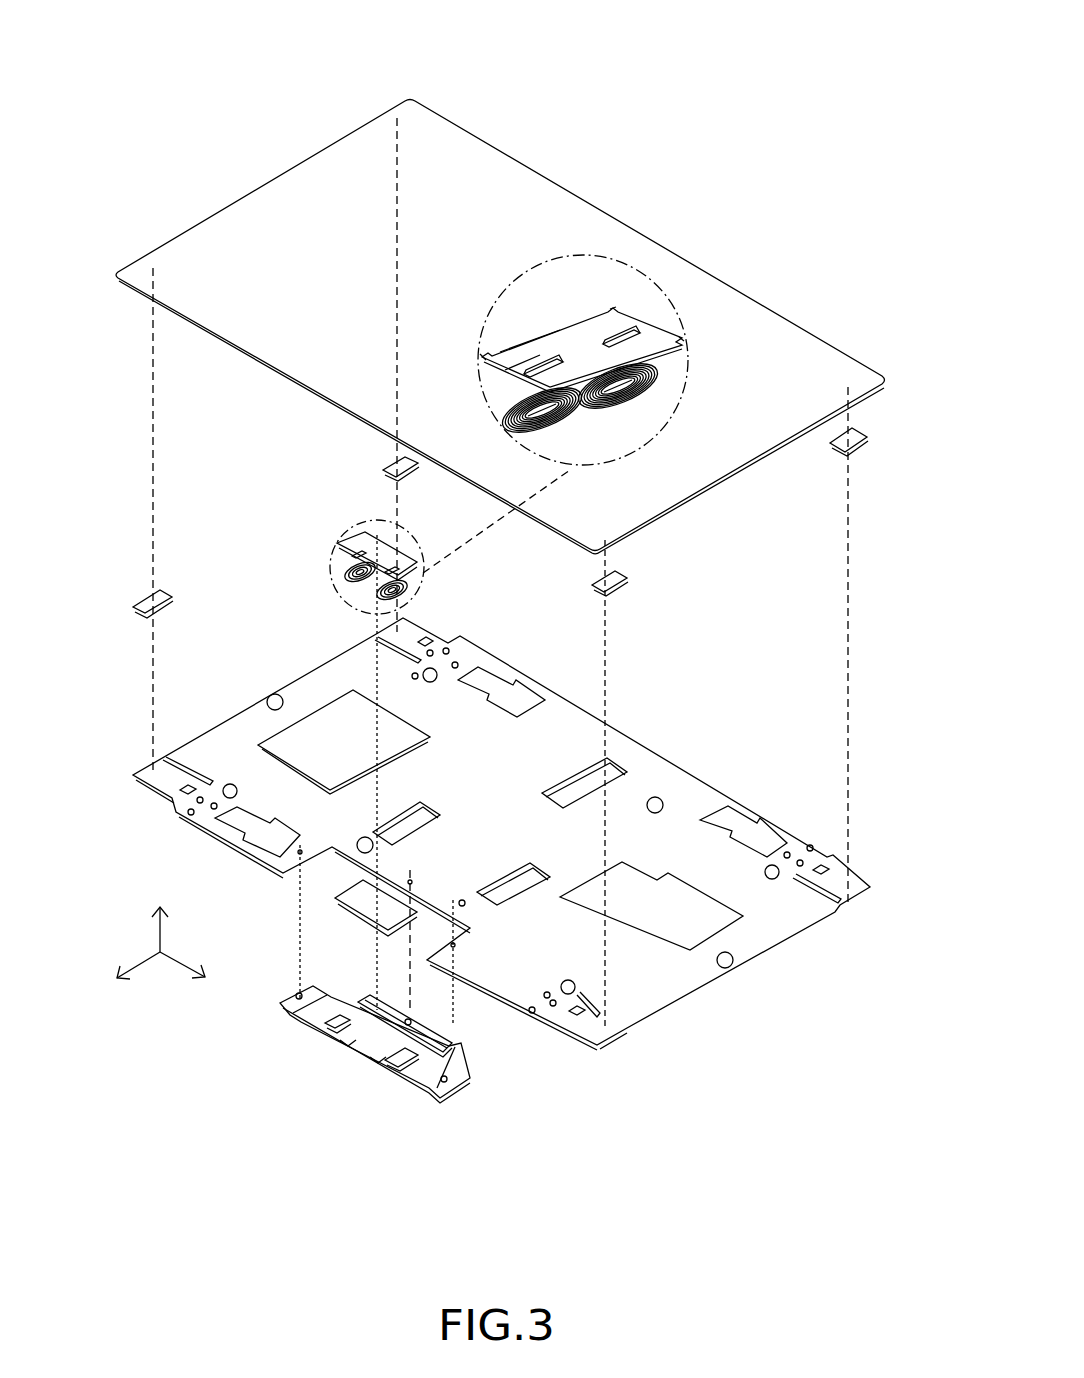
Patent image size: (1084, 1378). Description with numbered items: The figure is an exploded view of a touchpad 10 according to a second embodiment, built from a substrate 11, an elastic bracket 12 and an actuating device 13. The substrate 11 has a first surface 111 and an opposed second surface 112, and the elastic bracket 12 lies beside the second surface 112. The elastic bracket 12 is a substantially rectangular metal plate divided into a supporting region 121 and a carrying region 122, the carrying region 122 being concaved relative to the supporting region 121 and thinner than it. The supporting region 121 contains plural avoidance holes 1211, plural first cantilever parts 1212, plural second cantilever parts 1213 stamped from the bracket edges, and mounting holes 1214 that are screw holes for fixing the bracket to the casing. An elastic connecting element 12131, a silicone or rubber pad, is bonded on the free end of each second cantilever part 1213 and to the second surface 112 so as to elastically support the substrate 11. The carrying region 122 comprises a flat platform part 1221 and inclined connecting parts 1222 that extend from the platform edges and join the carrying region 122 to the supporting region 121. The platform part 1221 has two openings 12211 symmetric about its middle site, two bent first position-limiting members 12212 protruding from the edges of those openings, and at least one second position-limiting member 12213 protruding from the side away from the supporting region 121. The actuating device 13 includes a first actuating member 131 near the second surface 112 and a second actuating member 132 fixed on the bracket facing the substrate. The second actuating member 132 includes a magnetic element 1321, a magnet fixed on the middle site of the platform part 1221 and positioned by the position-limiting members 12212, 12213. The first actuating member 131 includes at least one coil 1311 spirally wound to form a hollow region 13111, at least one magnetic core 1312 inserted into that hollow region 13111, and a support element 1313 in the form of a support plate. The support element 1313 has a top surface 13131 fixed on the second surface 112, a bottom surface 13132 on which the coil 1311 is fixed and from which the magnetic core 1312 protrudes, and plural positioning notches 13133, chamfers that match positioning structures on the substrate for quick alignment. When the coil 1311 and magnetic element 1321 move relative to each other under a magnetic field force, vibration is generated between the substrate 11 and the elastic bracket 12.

The touchpad 10 is at (244, 131).
The substrate 11 is at (543, 80).
The first surface 111 is at (840, 317).
The second surface 112 is at (723, 527).
The elastic bracket 12 is at (641, 1115).
The supporting region 121 is at (705, 1060).
The avoidance holes 1211 is at (773, 793).
The first cantilever parts 1212 is at (540, 755).
The second cantilever parts 1213 is at (128, 810).
The elastic connecting element 12131 is at (862, 445).
The mounting holes 1214 is at (240, 668).
The carrying region 122 is at (703, 1205).
The platform part 1221 is at (786, 1170).
The openings 12211 is at (415, 1068).
The first position-limiting members 12212 is at (283, 1030).
The second position-limiting member 12213 is at (313, 1077).
The connecting parts 1222 is at (467, 1080).
The actuating device 13 is at (663, 65).
The first actuating member 131 is at (726, 20).
The coil 1311 is at (513, 420).
The hollow region 13111 is at (570, 420).
The magnetic core 1312 is at (613, 337).
The support element 1313 is at (803, 55).
The top surface 13131 is at (515, 347).
The bottom surface 13132 is at (510, 372).
The positioning notches 13133 is at (486, 358).
The second actuating member 132 is at (333, 942).
The magnetic element 1321 is at (376, 734).